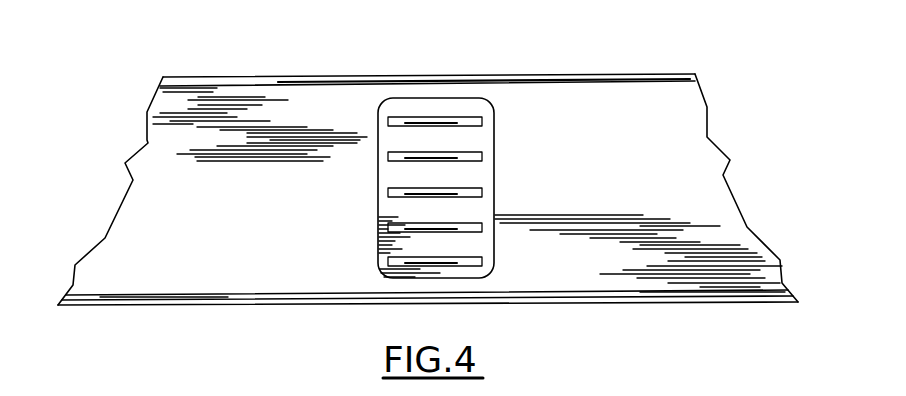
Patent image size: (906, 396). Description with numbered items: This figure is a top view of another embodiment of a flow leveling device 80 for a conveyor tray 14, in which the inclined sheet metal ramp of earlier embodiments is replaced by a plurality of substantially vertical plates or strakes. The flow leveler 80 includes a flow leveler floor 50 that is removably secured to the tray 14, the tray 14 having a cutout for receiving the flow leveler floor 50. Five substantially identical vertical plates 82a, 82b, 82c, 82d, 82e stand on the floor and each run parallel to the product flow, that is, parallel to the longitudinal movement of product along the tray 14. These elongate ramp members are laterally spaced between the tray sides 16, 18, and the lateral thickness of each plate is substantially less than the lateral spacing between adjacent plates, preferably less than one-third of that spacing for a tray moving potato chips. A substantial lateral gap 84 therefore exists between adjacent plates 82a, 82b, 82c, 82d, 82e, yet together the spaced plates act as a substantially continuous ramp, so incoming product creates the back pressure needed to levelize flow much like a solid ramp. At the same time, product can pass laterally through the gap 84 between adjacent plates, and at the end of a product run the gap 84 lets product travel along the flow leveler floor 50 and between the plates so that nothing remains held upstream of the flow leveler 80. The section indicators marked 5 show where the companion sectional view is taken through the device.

The tray 14 is at (240, 234).
The tray side 16 is at (417, 77).
The tray side 18 is at (262, 302).
The flow leveling device 80 is at (503, 100).
The flow leveler floor 50 is at (485, 133).
The vertical plate 82a is at (457, 117).
The vertical plate 82b is at (398, 152).
The vertical plate 82c is at (398, 188).
The vertical plate 82d is at (398, 223).
The vertical plate 82e is at (398, 257).
The lateral gap 84 is at (487, 238).
The section line 5- 5 is at (436, 180).